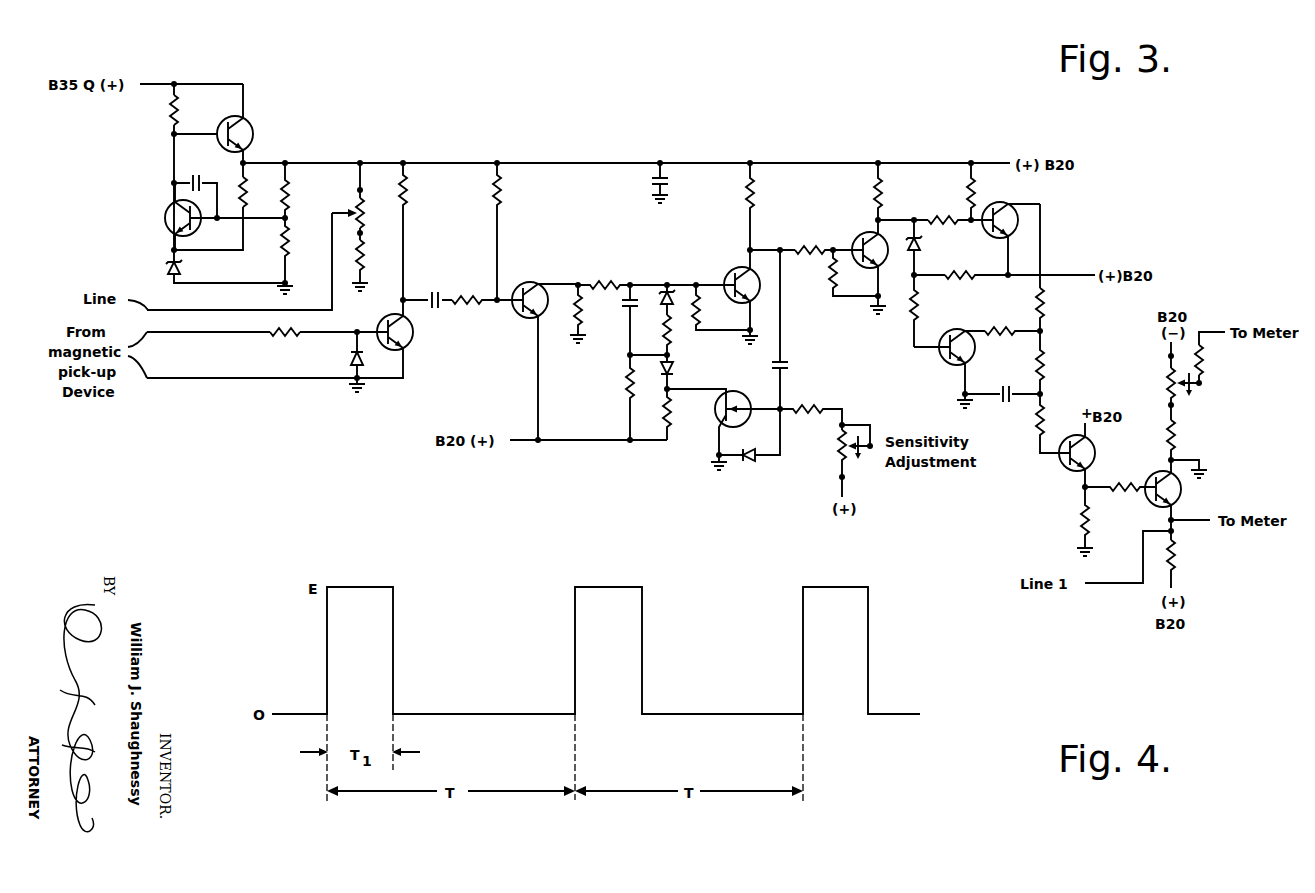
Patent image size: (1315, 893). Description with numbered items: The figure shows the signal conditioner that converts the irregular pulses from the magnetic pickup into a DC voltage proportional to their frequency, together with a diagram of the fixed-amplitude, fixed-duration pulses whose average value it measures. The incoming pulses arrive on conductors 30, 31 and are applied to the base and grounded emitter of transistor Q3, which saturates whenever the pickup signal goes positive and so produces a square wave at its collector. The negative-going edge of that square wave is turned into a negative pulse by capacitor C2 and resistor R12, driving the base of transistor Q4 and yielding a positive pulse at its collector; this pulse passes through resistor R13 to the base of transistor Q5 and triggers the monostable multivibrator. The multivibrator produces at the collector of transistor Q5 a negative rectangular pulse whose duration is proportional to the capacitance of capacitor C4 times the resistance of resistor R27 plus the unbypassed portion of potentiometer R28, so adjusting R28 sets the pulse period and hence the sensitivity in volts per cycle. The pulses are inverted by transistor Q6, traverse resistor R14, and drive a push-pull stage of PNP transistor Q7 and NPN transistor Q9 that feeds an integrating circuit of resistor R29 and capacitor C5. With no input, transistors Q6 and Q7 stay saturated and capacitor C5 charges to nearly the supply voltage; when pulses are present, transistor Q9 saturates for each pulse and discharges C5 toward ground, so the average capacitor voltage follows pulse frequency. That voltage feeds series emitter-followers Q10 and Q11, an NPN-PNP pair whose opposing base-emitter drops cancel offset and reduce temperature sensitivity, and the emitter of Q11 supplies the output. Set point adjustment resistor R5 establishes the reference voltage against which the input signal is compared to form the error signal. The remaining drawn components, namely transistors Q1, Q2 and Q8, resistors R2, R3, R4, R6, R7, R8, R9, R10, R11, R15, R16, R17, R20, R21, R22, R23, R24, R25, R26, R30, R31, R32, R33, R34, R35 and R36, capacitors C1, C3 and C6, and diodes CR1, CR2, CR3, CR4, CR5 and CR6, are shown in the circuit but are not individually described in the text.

The transistor Q1 is at (178, 216).
The transistor Q2 is at (248, 123).
The transistor Q3 is at (398, 339).
The transistor Q4 is at (537, 352).
The transistor Q5 is at (728, 290).
The transistor Q6 is at (861, 256).
The PNP transistor Q7 is at (999, 238).
The transistor Q8 is at (747, 415).
The NPN transistor Q9 is at (949, 361).
The emitter-follower transistor Q10 is at (1062, 455).
The emitter-follower transistor Q11 is at (1181, 490).
The resistor R2 is at (255, 192).
The resistor R3 is at (297, 190).
The resistor R4 is at (297, 252).
The set point adjustment resistor R5 is at (360, 213).
The resistor R6 is at (415, 231).
The resistor R7 is at (509, 231).
The resistor R8 is at (762, 206).
The resistor R9 is at (890, 191).
The resistor R10 is at (988, 191).
The resistor R11 is at (375, 265).
The resistor R12 is at (474, 309).
The resistor R13 is at (728, 273).
The resistor R14 is at (821, 241).
The resistor R15 is at (949, 211).
The resistor R16 is at (594, 314).
The resistor R17 is at (721, 307).
The resistor R20 is at (287, 340).
The resistor R21 is at (684, 335).
The resistor R22 is at (976, 284).
The resistor R23 is at (612, 397).
The resistor R24 is at (685, 414).
The resistor R25 is at (930, 311).
The resistor R26 is at (1012, 322).
The resistor R27 is at (811, 409).
The potentiometer R28 is at (835, 461).
The resistor R29 is at (1057, 341).
The resistor R30 is at (1035, 423).
The potentiometer R31 is at (1168, 394).
The resistor R32 is at (1215, 357).
The resistor R33 is at (1100, 521).
The resistor R34 is at (1120, 478).
The resistor R35 is at (1188, 440).
The resistor R36 is at (1188, 564).
The capacitor C1 is at (195, 187).
The capacitor C2 is at (427, 293).
The capacitor C3 is at (618, 320).
The capacitor C4 is at (791, 329).
The capacitor C5 is at (1002, 385).
The capacitor C6 is at (671, 183).
The zener diode CR1 is at (225, 266).
The diode CR2 is at (340, 362).
The zener diode CR3 is at (657, 289).
The diode CR4 is at (684, 372).
The diode CR5 is at (749, 445).
The zener diode CR6 is at (929, 247).
The conductor 30 is at (206, 334).
The conductor 31 is at (206, 380).